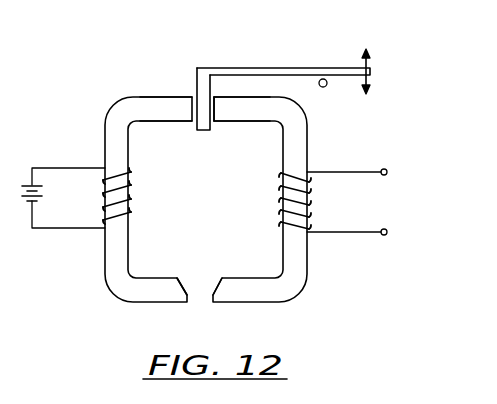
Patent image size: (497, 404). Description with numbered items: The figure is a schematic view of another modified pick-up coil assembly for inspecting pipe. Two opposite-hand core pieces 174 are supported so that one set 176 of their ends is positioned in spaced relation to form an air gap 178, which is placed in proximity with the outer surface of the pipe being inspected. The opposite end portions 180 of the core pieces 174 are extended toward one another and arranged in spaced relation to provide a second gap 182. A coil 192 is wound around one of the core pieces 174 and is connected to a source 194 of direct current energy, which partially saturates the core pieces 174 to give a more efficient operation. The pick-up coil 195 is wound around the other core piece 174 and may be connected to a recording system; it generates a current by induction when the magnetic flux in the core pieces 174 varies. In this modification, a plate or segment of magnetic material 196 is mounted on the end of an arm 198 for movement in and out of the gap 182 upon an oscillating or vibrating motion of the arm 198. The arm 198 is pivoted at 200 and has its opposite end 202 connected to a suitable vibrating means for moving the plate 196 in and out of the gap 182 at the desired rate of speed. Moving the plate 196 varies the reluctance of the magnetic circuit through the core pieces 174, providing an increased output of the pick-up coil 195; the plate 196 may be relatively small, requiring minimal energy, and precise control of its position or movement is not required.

The core pieces 174 is at (112, 254).
The set of ends 176 is at (241, 286).
The air gap 178 is at (200, 289).
The opposite end portions 180 is at (240, 115).
The second gap 182 is at (213, 108).
The coil 192 is at (132, 213).
The source of direct current energy 194 is at (21, 170).
The pick-up coil 195 is at (281, 213).
The plate or segment of magnetic material 196 is at (198, 84).
The arm 198 is at (272, 71).
The pivot 200 is at (321, 87).
The opposite end of arm 202 is at (371, 74).